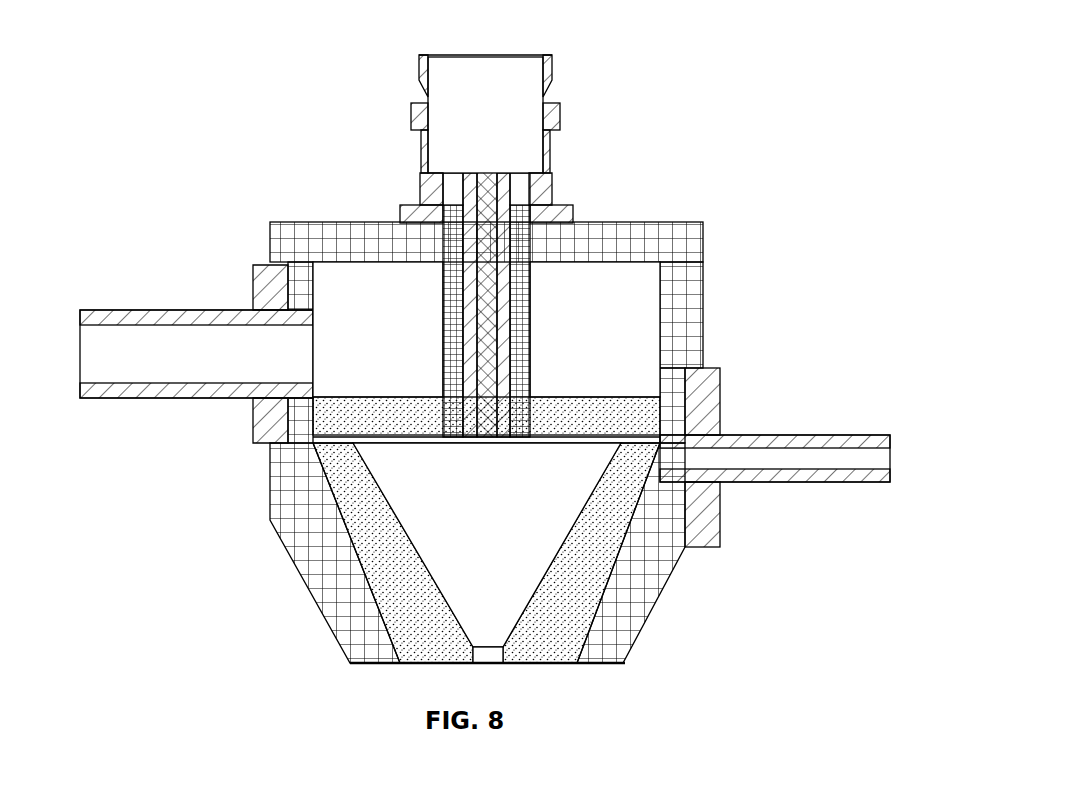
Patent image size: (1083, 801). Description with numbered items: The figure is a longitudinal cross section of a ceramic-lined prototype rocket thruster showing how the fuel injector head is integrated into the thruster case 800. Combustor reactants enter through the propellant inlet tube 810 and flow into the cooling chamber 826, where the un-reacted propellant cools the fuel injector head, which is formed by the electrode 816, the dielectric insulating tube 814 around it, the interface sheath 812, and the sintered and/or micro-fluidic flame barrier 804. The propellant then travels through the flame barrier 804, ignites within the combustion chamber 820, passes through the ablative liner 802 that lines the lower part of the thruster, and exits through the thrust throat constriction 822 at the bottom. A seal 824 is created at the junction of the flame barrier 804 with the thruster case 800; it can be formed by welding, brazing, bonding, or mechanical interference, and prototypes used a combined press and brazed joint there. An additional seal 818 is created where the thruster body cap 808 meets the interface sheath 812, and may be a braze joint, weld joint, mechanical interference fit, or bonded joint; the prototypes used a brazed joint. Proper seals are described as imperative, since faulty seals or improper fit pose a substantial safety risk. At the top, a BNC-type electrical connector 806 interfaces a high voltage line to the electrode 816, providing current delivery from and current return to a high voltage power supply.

The thruster case 800 is at (706, 297).
The ablative liner 802 is at (383, 573).
The sintered and/or micro-fluidic flame barrier 804 is at (350, 420).
The BNC-type electrical connector 806 is at (421, 193).
The thruster body cap 808 is at (340, 240).
The propellant inlet tube 810 is at (195, 345).
The interface sheath 812 is at (500, 290).
The dielectric insulating tube 814 is at (515, 268).
The electrode 816 is at (500, 337).
The seal 818 is at (543, 210).
The combustion chamber 820 is at (527, 525).
The thrust throat constriction 822 is at (532, 658).
The seal 824 is at (668, 388).
The cooling chamber 826 is at (406, 348).